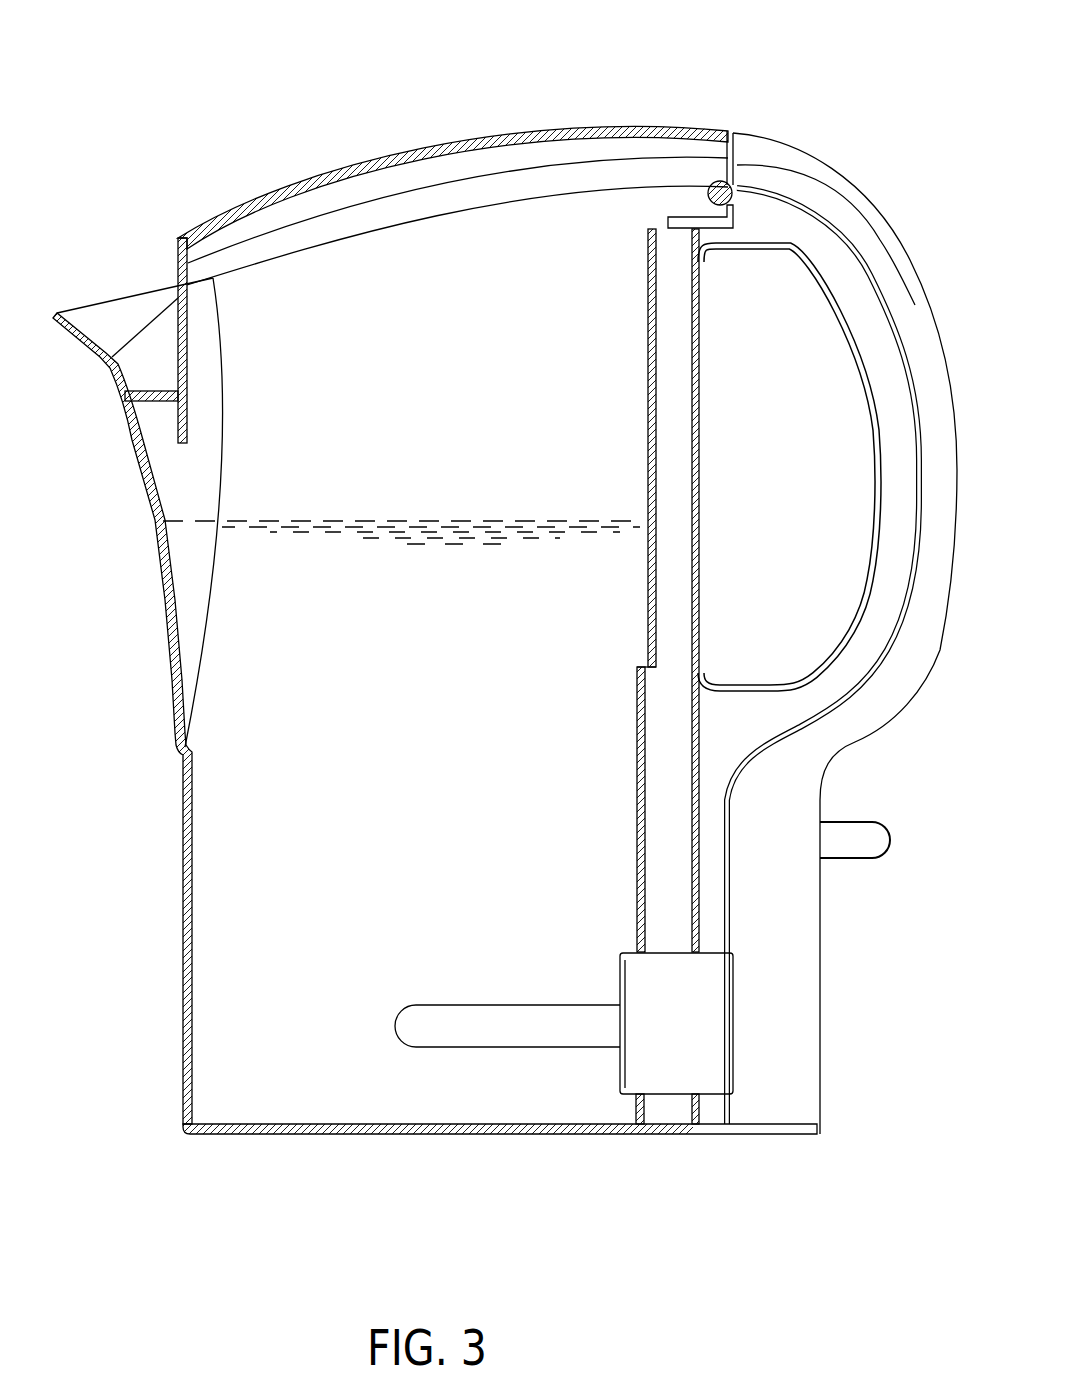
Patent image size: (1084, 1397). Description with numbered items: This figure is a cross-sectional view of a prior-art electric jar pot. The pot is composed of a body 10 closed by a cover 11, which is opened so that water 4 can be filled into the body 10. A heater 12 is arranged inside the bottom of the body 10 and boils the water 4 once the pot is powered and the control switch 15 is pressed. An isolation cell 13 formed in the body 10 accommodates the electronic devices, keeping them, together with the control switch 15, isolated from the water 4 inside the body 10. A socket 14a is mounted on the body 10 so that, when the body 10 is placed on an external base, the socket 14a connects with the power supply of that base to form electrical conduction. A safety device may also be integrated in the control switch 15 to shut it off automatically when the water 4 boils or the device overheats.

The body 10 is at (162, 786).
The cover 11 is at (560, 107).
The water 4 is at (293, 640).
The isolation cell 13 is at (648, 323).
The heater 12 is at (485, 1027).
The socket 14a is at (770, 1157).
The control switch 15 is at (852, 822).